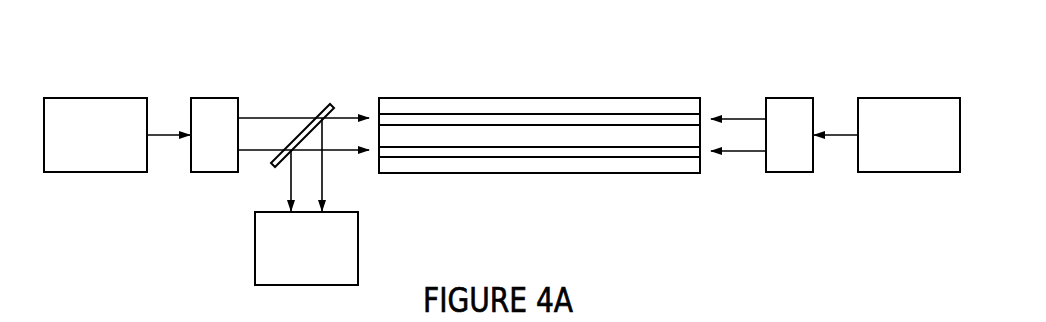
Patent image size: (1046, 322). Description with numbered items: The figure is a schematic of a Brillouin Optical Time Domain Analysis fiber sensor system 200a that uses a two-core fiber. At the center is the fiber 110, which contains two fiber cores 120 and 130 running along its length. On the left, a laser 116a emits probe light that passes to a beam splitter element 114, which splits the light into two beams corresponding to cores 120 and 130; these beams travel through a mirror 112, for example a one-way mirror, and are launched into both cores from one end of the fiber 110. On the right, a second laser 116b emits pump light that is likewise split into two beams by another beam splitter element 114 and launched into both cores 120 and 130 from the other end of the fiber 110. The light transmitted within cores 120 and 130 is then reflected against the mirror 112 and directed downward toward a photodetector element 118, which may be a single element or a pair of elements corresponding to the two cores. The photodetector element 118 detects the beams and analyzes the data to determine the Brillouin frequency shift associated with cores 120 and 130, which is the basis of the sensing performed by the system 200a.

The BOTDA fiber sensor system 200a is at (140, 58).
The laser 116a is at (95, 135).
The laser 116b is at (909, 135).
The beam splitter element 114 is at (502, 135).
The mirror 112 is at (322, 103).
The photodetector element 118 is at (306, 248).
The fiber 110 is at (604, 97).
The fiber core 120 is at (672, 118).
The fiber core 130 is at (672, 152).